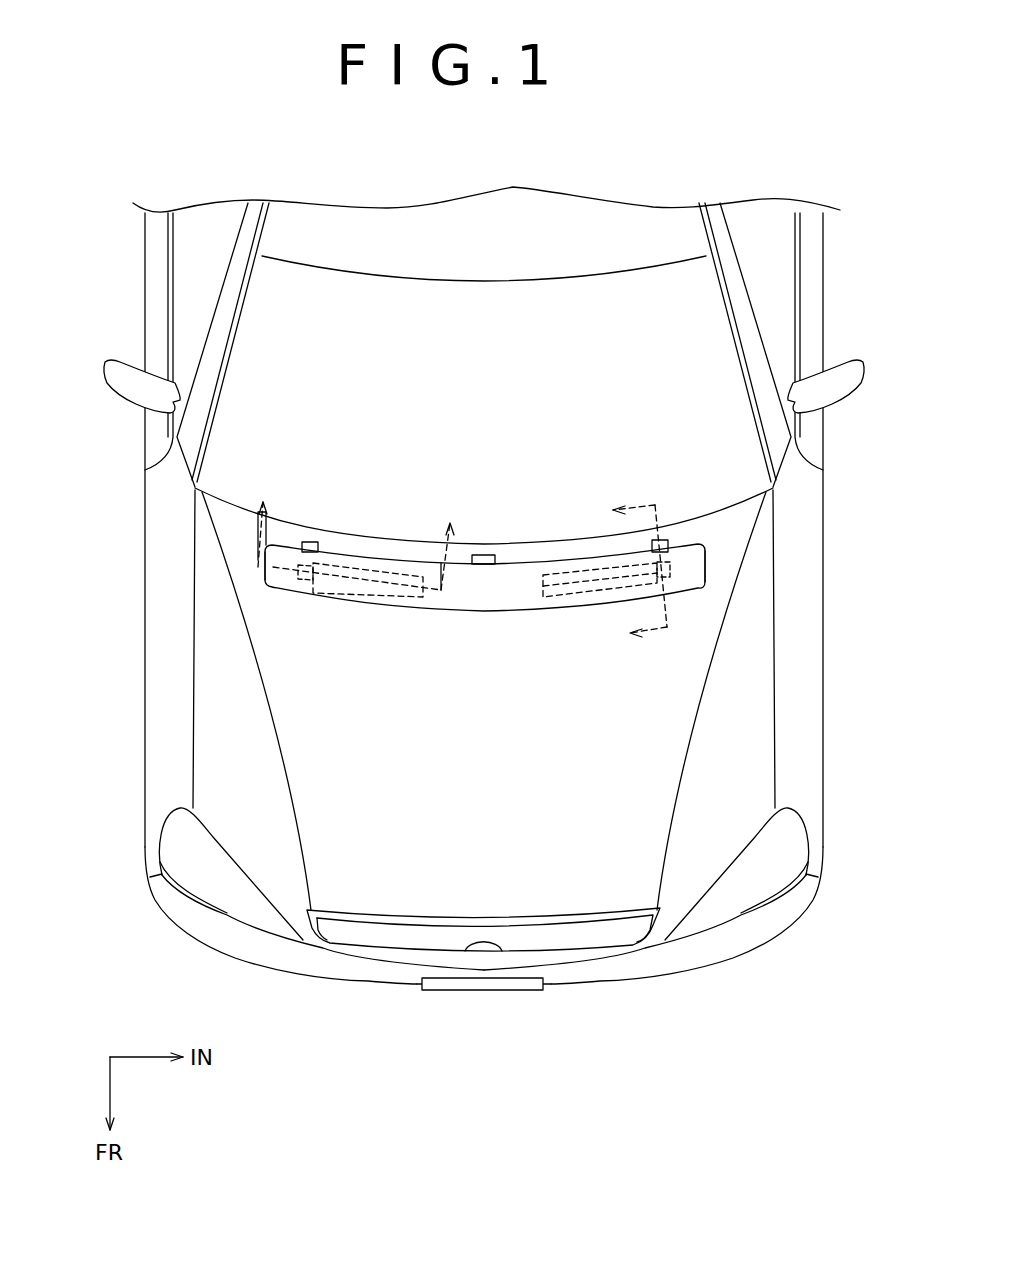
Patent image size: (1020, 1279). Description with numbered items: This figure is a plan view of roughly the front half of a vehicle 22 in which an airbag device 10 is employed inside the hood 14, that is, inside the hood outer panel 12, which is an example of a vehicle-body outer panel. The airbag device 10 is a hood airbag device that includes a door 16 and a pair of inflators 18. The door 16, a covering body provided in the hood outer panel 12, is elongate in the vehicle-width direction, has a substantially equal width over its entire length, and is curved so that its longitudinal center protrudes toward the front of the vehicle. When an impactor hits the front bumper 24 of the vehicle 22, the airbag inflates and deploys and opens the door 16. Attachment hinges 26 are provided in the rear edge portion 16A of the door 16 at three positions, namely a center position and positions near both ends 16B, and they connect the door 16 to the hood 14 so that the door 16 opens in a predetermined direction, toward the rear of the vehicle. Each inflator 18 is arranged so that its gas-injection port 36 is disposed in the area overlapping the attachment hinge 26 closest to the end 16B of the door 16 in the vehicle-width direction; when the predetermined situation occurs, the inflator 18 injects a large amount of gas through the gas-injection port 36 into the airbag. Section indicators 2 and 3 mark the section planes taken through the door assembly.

The airbag device 10 is at (243, 558).
The hood outer panel 12 is at (700, 606).
The hood 14 is at (770, 678).
The door 16 is at (487, 613).
The rear edge portion 16A is at (423, 556).
The ends 16B is at (262, 540).
The inflator 18 is at (388, 598).
The vehicle 22 is at (143, 945).
The front bumper 24 is at (605, 982).
The attachment hinge 26 is at (315, 540).
The gas-injection port 36 is at (304, 585).
The section line for FIG. 2 is at (640, 568).
The section line for FIG. 3 is at (366, 540).